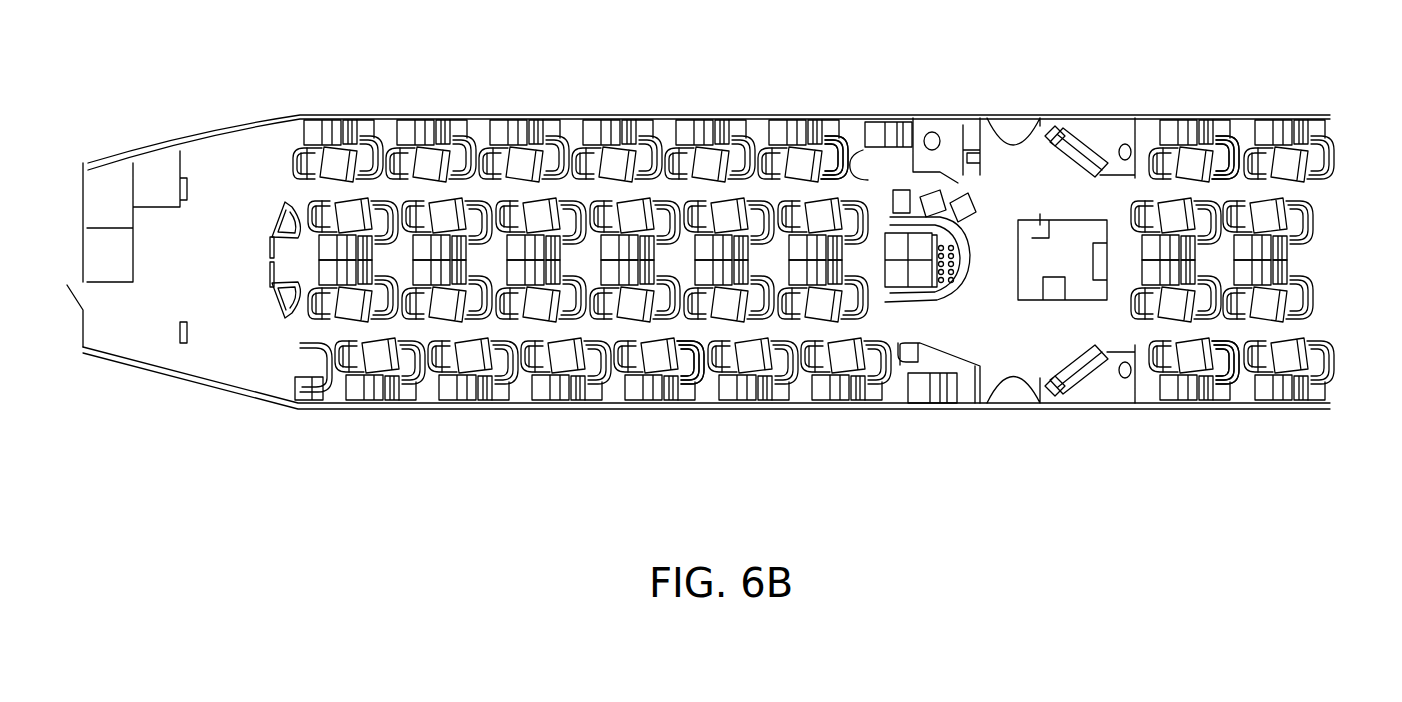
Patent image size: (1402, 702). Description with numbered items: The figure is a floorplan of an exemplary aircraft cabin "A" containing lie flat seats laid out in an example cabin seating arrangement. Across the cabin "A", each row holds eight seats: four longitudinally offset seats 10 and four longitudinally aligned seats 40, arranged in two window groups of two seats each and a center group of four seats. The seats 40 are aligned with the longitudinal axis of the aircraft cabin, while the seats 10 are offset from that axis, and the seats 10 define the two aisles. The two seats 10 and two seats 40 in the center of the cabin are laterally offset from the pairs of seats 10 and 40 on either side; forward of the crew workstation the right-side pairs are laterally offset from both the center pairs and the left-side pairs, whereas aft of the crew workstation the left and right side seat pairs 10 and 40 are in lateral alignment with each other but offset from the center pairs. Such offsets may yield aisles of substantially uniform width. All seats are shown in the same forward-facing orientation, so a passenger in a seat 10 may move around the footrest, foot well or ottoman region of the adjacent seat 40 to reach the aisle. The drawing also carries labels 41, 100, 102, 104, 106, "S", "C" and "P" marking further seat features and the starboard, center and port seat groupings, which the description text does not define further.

The seat 10 is at (851, 138).
The seat 40 is at (786, 112).
The shell side wall 41 is at (797, 355).
The aircraft cabin seating arrangement 100 is at (752, 249).
The center seat column 102 is at (466, 190).
The forward center seat partition 104 is at (262, 300).
The forward center seat partition 106 is at (270, 214).
The cabin A is at (667, 112).
The starboard seat row S is at (1336, 150).
The center seat row C is at (1317, 257).
The port seat row P is at (1338, 371).